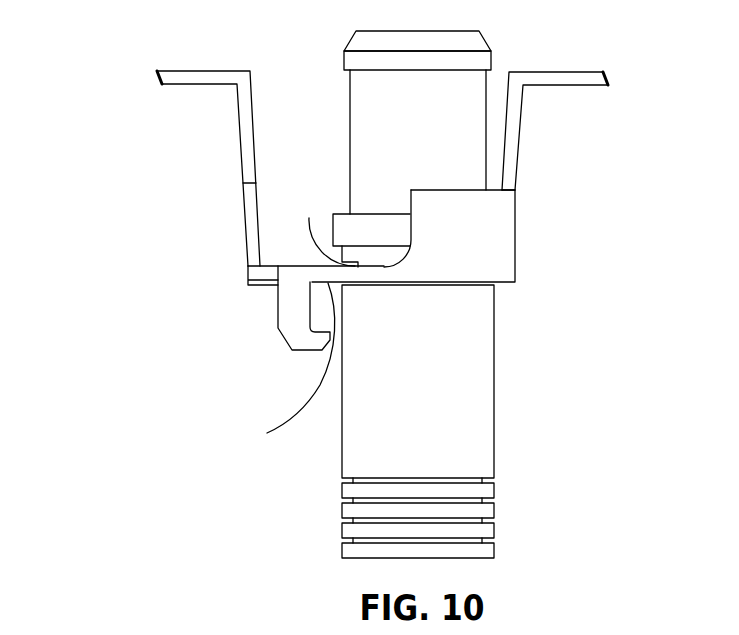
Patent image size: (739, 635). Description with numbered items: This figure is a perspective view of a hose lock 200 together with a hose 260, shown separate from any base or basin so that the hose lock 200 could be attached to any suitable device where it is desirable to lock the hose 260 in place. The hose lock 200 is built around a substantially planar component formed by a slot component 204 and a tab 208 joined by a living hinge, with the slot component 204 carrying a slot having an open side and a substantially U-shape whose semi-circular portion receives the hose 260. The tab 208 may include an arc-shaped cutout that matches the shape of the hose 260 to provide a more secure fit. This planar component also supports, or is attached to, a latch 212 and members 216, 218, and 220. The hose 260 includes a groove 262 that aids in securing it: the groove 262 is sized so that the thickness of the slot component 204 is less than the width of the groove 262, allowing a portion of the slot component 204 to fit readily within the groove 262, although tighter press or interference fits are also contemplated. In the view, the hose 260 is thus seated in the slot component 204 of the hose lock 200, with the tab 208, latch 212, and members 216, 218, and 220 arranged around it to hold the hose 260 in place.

The hose lock 200 is at (211, 152).
The slot component 204 is at (270, 364).
The tab 208 is at (245, 278).
The latch 212 is at (292, 330).
The member 216 is at (523, 135).
The member 218 is at (475, 255).
The member 220 is at (243, 212).
The hose 260 is at (477, 432).
The groove 262 is at (309, 218).